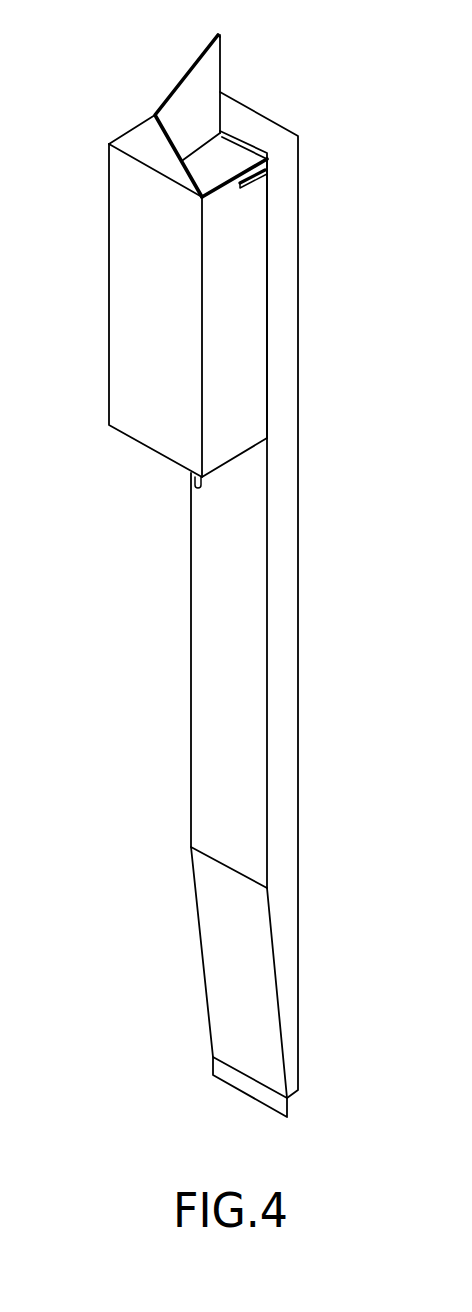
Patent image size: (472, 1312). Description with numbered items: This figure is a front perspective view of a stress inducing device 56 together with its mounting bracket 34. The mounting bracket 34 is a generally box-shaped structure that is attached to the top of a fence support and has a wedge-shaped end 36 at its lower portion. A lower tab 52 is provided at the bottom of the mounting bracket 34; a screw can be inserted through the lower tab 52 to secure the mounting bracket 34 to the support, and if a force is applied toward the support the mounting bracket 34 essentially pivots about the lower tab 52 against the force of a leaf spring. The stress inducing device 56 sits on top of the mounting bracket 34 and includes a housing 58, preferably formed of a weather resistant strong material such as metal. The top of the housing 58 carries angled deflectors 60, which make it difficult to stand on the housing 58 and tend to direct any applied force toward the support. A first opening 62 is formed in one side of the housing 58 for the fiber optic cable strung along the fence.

The mounting bracket 34 is at (318, 603).
The wedge-shaped end 36 is at (254, 1009).
The lower tab 52 is at (252, 1088).
The stress inducing device 56 is at (97, 168).
The housing 58 is at (118, 308).
The angled deflectors 60 is at (133, 139).
The first opening 62 is at (256, 182).